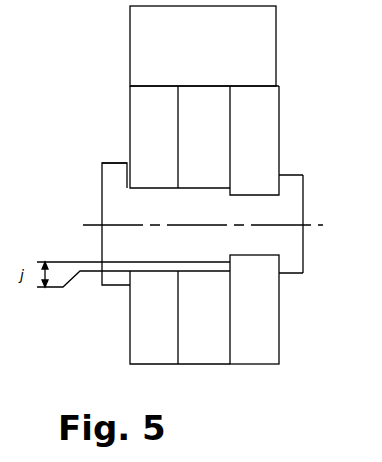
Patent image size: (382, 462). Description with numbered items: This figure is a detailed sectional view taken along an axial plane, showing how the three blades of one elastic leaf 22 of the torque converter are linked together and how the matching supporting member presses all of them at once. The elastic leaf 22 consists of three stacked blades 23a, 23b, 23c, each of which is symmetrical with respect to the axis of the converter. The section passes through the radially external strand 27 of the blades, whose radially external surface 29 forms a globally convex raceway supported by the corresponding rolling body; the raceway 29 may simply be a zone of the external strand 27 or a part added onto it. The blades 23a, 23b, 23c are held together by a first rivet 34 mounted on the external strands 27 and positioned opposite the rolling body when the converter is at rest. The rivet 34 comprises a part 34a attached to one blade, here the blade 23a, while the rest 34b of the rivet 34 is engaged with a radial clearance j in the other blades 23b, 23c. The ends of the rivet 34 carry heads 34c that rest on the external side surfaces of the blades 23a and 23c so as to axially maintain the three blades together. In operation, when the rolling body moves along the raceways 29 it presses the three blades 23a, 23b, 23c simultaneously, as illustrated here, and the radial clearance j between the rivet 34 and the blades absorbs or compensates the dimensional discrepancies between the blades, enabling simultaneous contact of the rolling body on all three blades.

The elastic leaf 22 is at (100, 318).
The blade 23a is at (263, 148).
The blade 23b is at (207, 135).
The blade 23c is at (148, 116).
The radially external strand 27 is at (261, 318).
The radially external surface 29 is at (155, 85).
The first rivet 34 is at (115, 212).
The rivet part 34a is at (256, 208).
The rest of the rivet 34b is at (197, 242).
The rivet head 34c is at (113, 177).